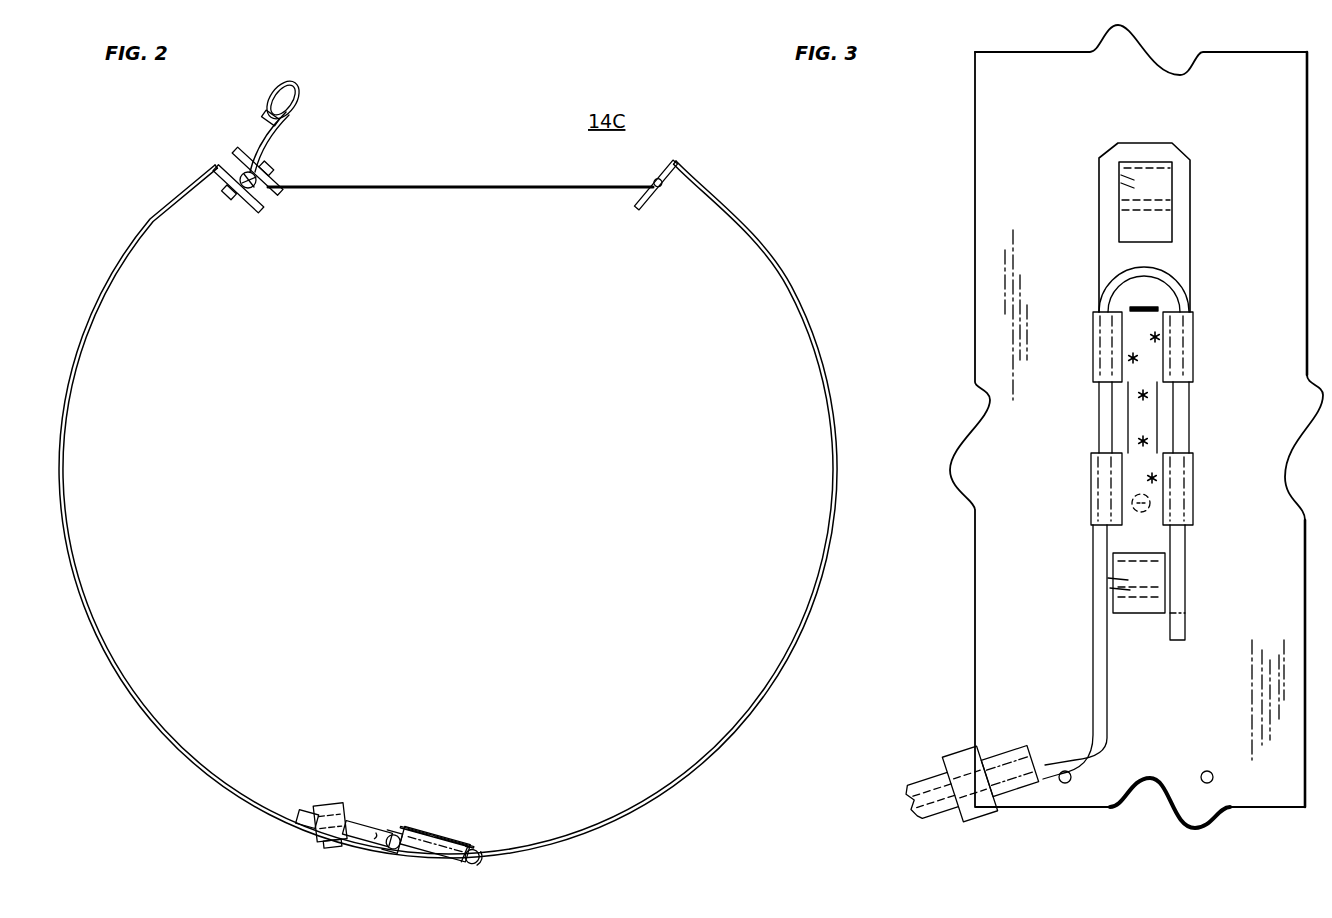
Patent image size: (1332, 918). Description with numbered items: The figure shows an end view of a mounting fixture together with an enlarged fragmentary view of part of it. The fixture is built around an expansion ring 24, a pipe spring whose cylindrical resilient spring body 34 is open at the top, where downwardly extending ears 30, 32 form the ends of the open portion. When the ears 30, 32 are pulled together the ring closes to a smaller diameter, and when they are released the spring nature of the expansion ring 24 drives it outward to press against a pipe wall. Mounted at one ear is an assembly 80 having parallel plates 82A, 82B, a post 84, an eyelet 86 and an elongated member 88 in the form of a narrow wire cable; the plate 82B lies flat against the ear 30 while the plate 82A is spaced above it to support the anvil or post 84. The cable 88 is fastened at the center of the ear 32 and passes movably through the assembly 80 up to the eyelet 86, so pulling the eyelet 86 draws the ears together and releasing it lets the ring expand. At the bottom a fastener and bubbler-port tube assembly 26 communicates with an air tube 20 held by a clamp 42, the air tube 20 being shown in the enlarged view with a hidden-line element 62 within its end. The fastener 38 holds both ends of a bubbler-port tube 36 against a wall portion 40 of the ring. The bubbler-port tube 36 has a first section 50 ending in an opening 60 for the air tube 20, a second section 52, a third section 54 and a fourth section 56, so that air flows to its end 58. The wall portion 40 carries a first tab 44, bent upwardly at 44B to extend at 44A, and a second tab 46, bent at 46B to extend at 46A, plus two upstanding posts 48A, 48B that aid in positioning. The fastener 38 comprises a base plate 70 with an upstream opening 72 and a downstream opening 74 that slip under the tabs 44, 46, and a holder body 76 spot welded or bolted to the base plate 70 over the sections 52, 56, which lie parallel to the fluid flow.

In FIG. 2, the air tube 20 is at (310, 808).
In FIG. 3, the air tube 20 is at (948, 815).
In FIG. 2, the expansion ring 24 is at (770, 285).
In FIG. 2, the fastener and bubbler-port tube assembly 26 is at (403, 814).
In FIG. 2, the ear 30 is at (242, 208).
In FIG. 2, the ear 32 is at (643, 206).
In FIG. 2, the spring body 34 is at (728, 205).
In FIG. 2, the bubbler-port tube 36 is at (470, 830).
In FIG. 3, the bubbler-port tube 36 is at (1120, 652).
In FIG. 2, the fastener 38 is at (490, 838).
In FIG. 3, the fastener 38 is at (1086, 320).
In FIG. 2, the wall portion 40 is at (425, 853).
In FIG. 3, the wall portion 40 is at (990, 222).
In FIG. 2, the clamp 42 is at (337, 807).
In FIG. 3, the clamp 42 is at (982, 812).
In FIG. 3, the first tab 44 is at (1149, 208).
In FIG. 3, the extending portion of first tab 44A is at (1132, 190).
In FIG. 3, the bend of first tab 44B is at (1126, 204).
In FIG. 3, the second tab 46 is at (1139, 579).
In FIG. 3, the extending portion of second tab 46A is at (1116, 570).
In FIG. 3, the bend of second tab 46B is at (1120, 600).
In FIG. 3, the post 48A is at (1066, 785).
In FIG. 3, the post 48B is at (1209, 785).
In FIG. 3, the first section 50 is at (976, 782).
In FIG. 3, the second section 52 is at (1102, 694).
In FIG. 3, the third section 54 is at (1128, 276).
In FIG. 3, the fourth section 56 is at (1182, 421).
In FIG. 3, the end of bubbler-port tube 58 is at (1178, 642).
In FIG. 3, the opening 60 is at (1010, 760).
In FIG. 3, the cable 62 is at (930, 790).
In FIG. 3, the base plate 70 is at (1148, 140).
In FIG. 3, the upstream opening 72 is at (1121, 168).
In FIG. 3, the downstream opening 74 is at (1118, 584).
In FIG. 3, the holder body 76 is at (1122, 345).
In FIG. 2, the assembly 80 is at (246, 189).
In FIG. 2, the plate 82A is at (272, 188).
In FIG. 2, the plate 82B is at (258, 209).
In FIG. 2, the post 84 is at (262, 168).
In FIG. 2, the eyelet 86 is at (268, 90).
In FIG. 2, the elongated member 88 is at (515, 186).